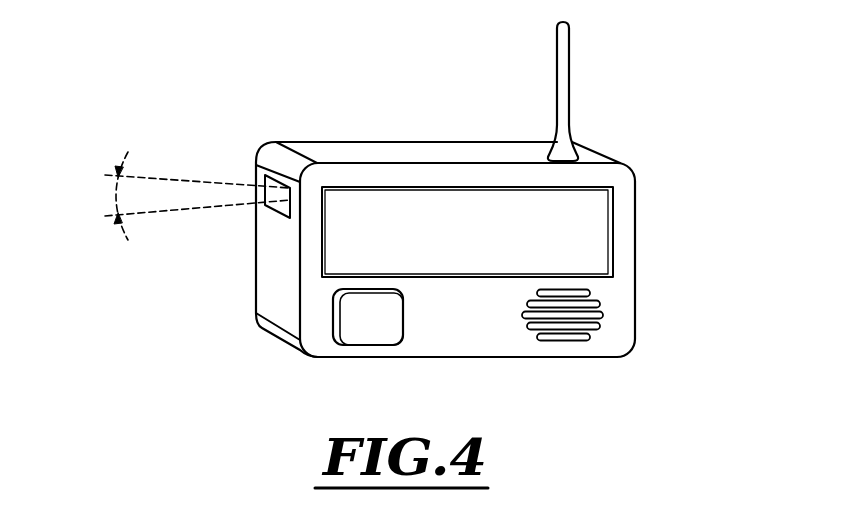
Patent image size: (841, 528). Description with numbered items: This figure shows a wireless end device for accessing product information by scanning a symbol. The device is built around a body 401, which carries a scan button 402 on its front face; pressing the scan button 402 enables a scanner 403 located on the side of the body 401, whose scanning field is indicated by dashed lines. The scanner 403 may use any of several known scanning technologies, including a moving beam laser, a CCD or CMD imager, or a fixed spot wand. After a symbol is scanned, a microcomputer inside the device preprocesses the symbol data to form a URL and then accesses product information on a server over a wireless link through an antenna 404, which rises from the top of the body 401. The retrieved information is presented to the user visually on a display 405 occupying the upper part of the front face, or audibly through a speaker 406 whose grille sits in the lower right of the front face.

The body 401 is at (622, 181).
The scan button 402 is at (365, 325).
The scanner 403 is at (113, 197).
The antenna 404 is at (562, 92).
The display 405 is at (580, 237).
The speaker 406 is at (590, 327).